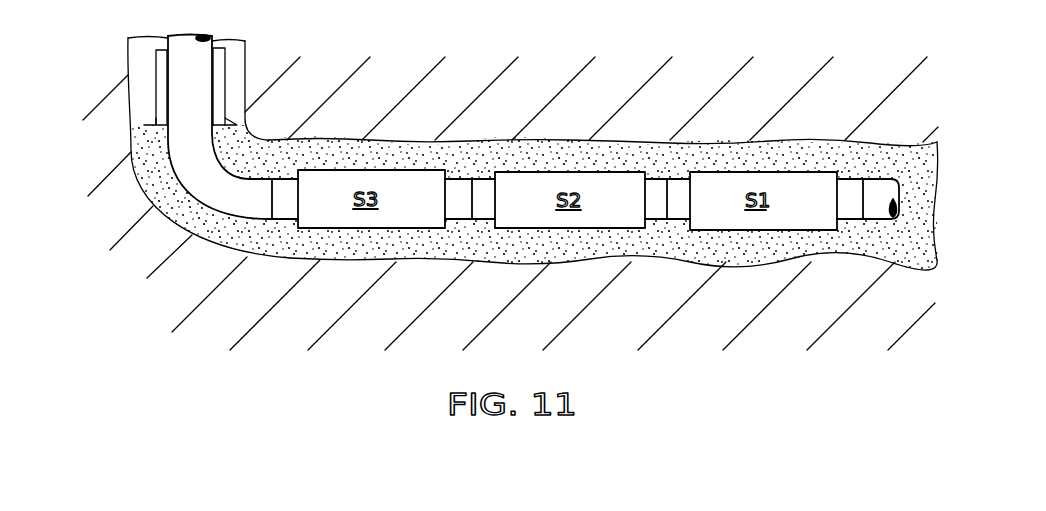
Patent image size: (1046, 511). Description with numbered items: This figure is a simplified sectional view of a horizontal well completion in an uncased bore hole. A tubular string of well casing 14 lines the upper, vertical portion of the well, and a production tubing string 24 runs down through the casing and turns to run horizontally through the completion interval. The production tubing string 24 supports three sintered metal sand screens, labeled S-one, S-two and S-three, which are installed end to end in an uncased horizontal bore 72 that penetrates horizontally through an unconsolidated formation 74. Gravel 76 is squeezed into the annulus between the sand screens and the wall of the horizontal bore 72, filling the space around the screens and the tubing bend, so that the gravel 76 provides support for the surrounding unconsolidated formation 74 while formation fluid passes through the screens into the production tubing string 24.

The well casing 14 is at (223, 82).
The production tubing string 24 is at (187, 73).
The uncased horizontal bore 72 is at (646, 145).
The unconsolidated formation 74 is at (547, 91).
The gravel 76 is at (335, 146).